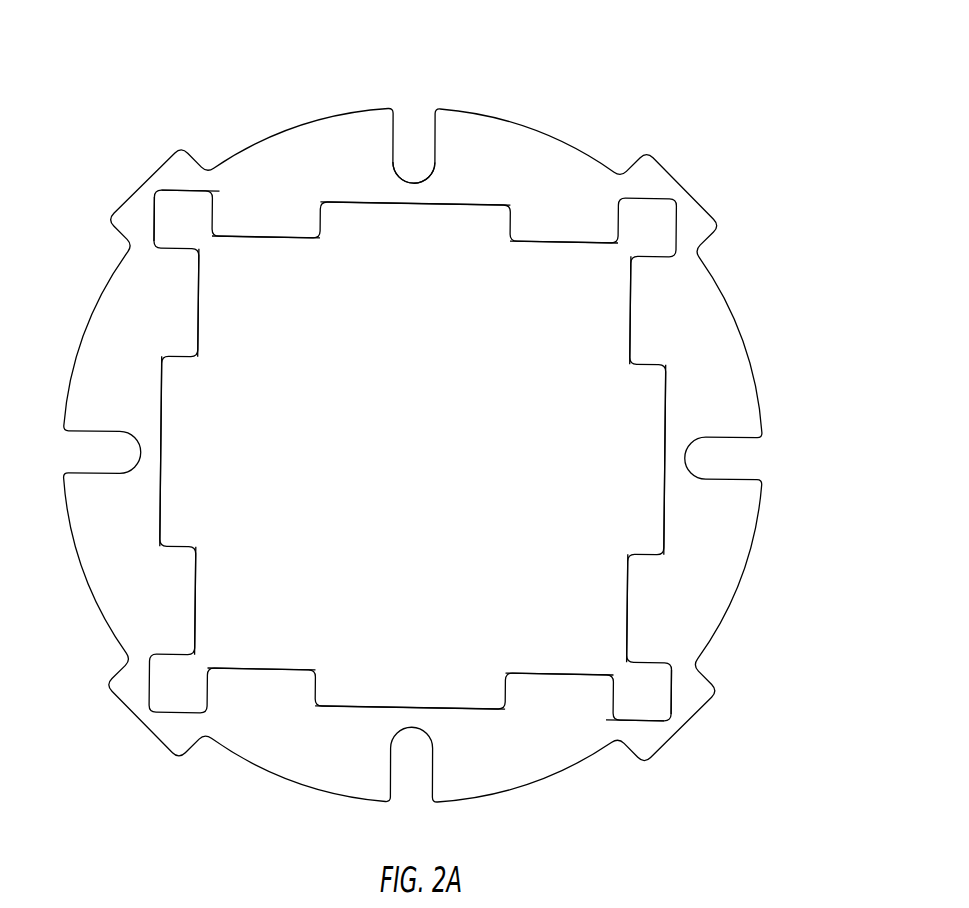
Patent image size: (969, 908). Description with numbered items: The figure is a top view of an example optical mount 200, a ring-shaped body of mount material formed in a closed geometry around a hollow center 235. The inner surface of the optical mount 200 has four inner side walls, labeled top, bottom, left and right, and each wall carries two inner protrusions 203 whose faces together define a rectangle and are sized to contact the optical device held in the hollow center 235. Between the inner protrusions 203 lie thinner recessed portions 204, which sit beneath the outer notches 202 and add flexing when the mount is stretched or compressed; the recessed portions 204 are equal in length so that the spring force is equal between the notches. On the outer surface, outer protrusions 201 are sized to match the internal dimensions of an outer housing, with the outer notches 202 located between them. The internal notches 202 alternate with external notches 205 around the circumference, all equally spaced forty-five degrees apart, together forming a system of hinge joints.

The optical mount 200 is at (650, 88).
The outer protrusions 201 is at (152, 196).
The outer notches 202 is at (415, 150).
The inner protrusions 203 is at (265, 239).
The recessed portions 204 is at (453, 204).
The external notches 205 is at (657, 697).
The hollow center 235 is at (433, 470).